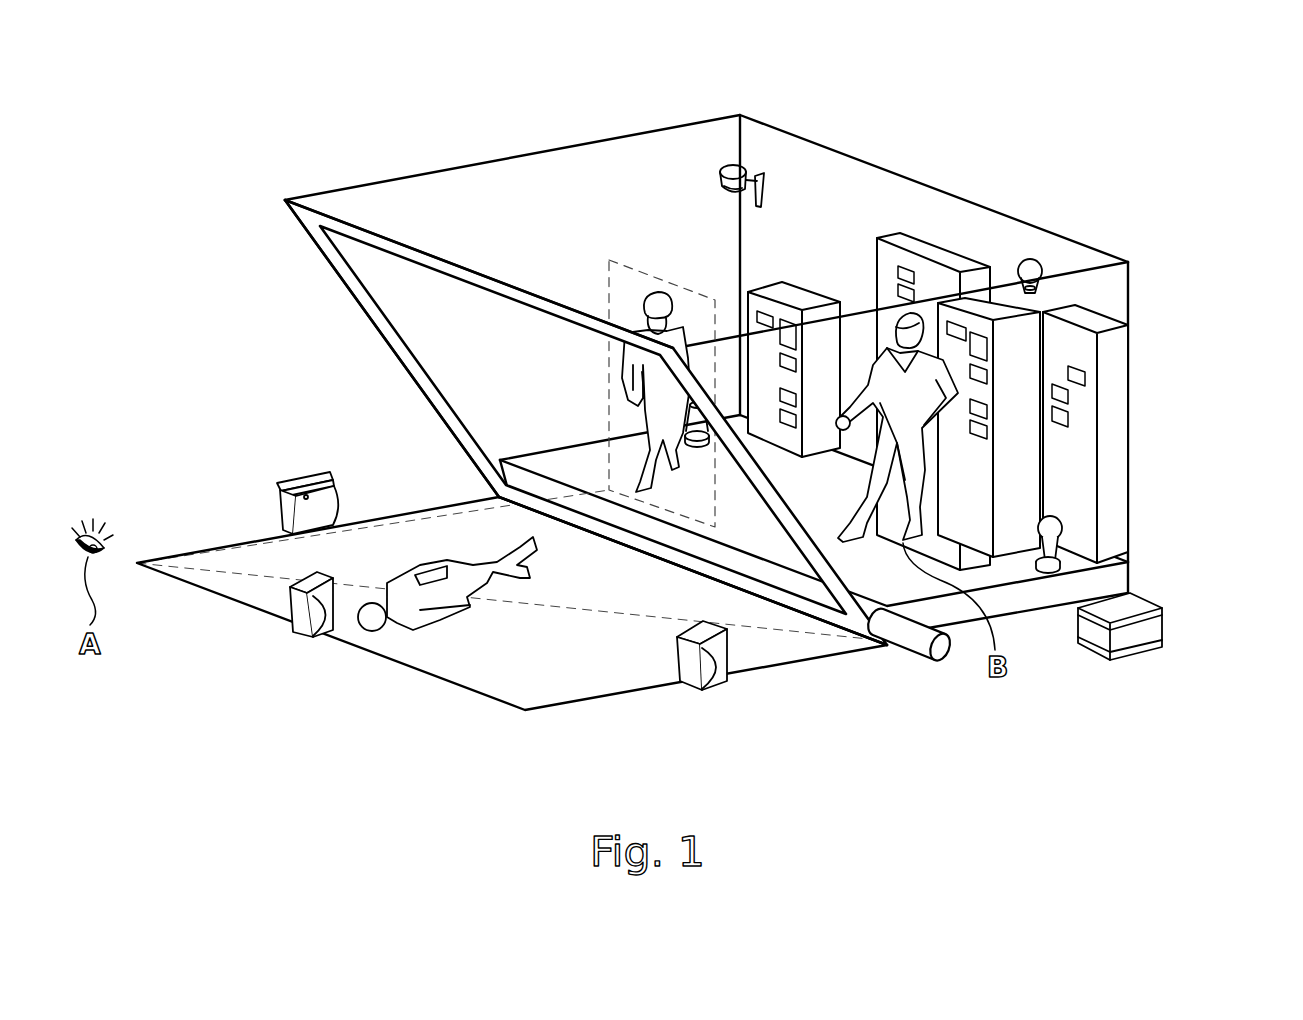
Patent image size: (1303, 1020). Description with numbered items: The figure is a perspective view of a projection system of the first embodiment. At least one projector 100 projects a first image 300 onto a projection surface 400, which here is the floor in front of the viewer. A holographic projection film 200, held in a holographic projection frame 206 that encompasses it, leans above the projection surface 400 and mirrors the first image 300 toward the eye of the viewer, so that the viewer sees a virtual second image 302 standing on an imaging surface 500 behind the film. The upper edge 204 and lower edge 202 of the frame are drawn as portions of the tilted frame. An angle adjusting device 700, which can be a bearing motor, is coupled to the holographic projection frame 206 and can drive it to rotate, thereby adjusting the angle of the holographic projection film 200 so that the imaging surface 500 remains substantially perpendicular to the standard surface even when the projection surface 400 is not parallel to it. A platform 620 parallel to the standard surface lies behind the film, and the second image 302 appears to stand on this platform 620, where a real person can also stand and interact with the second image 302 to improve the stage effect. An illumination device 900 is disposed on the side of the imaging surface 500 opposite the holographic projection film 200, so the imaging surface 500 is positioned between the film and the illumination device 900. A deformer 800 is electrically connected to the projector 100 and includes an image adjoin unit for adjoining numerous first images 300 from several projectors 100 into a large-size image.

The projector 100 is at (278, 500).
The holographic projection film 200 is at (531, 390).
The lower edge of frame 202 is at (478, 505).
The upper edge of frame 204 is at (343, 232).
The holographic projection frame 206 is at (290, 238).
The first image 300 is at (450, 628).
The second image 302 is at (650, 292).
The projection surface 400 is at (590, 702).
The imaging surface 500 is at (630, 252).
The platform 620 is at (1002, 571).
The angle adjusting device 700 is at (908, 655).
The deformer 800 is at (1164, 633).
The illumination device 900 is at (1056, 548).